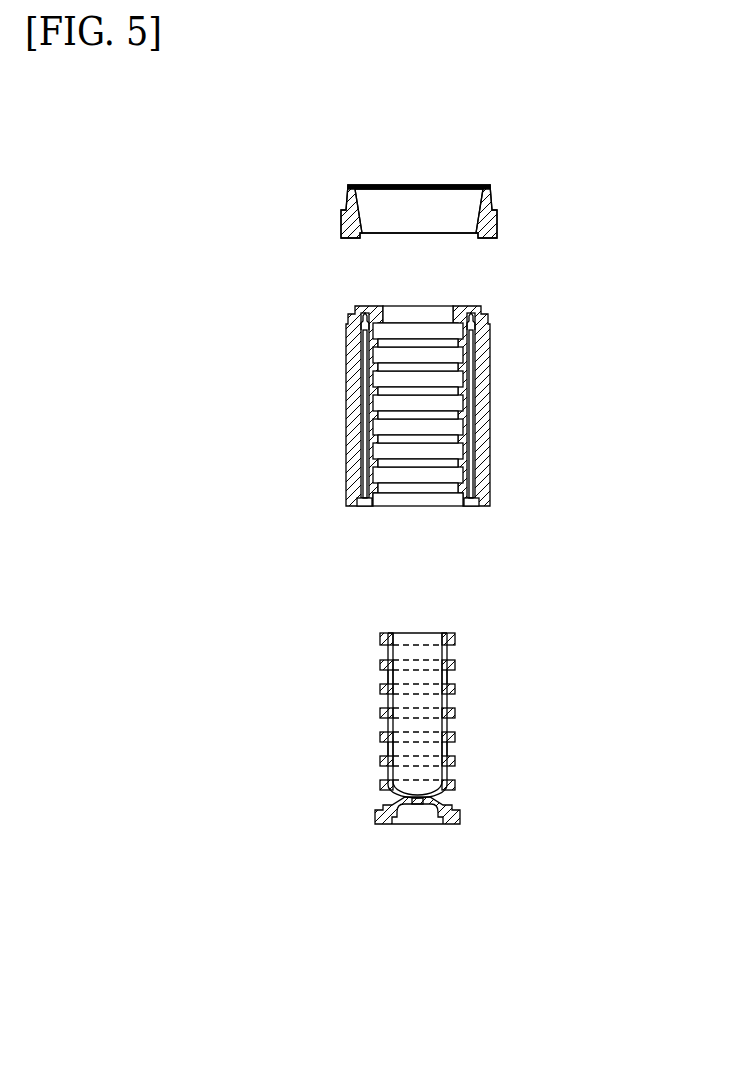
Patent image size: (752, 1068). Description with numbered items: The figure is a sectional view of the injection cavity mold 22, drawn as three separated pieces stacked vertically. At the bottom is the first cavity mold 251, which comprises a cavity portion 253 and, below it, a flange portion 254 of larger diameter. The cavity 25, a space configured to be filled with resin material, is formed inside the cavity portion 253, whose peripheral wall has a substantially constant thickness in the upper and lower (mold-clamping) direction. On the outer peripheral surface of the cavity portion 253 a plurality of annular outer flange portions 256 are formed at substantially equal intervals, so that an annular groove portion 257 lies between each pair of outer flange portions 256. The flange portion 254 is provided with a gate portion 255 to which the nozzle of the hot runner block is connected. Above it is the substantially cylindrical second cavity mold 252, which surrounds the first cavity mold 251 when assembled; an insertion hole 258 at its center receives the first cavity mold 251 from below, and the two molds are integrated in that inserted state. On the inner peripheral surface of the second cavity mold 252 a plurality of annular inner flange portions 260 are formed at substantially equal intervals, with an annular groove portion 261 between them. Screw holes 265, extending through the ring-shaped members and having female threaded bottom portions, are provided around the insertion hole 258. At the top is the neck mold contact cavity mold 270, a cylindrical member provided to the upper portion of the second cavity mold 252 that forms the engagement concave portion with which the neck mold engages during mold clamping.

The injection cavity mold 22 is at (455, 419).
The cavity 25 is at (404, 713).
The first cavity mold 251 is at (504, 802).
The second cavity mold 252 is at (492, 357).
The cavity portion 253 is at (472, 743).
The flange portion 254 is at (470, 812).
The gate portion 255 is at (416, 807).
The outer flange portions 256 is at (383, 665).
The annular groove portions 257 is at (377, 677).
The insertion hole 258 is at (420, 510).
The inner flange portions 260 is at (379, 349).
The annular groove portions 261 is at (382, 353).
The screw holes 265 is at (366, 436).
The neck mold contact cavity mold 270 is at (498, 222).